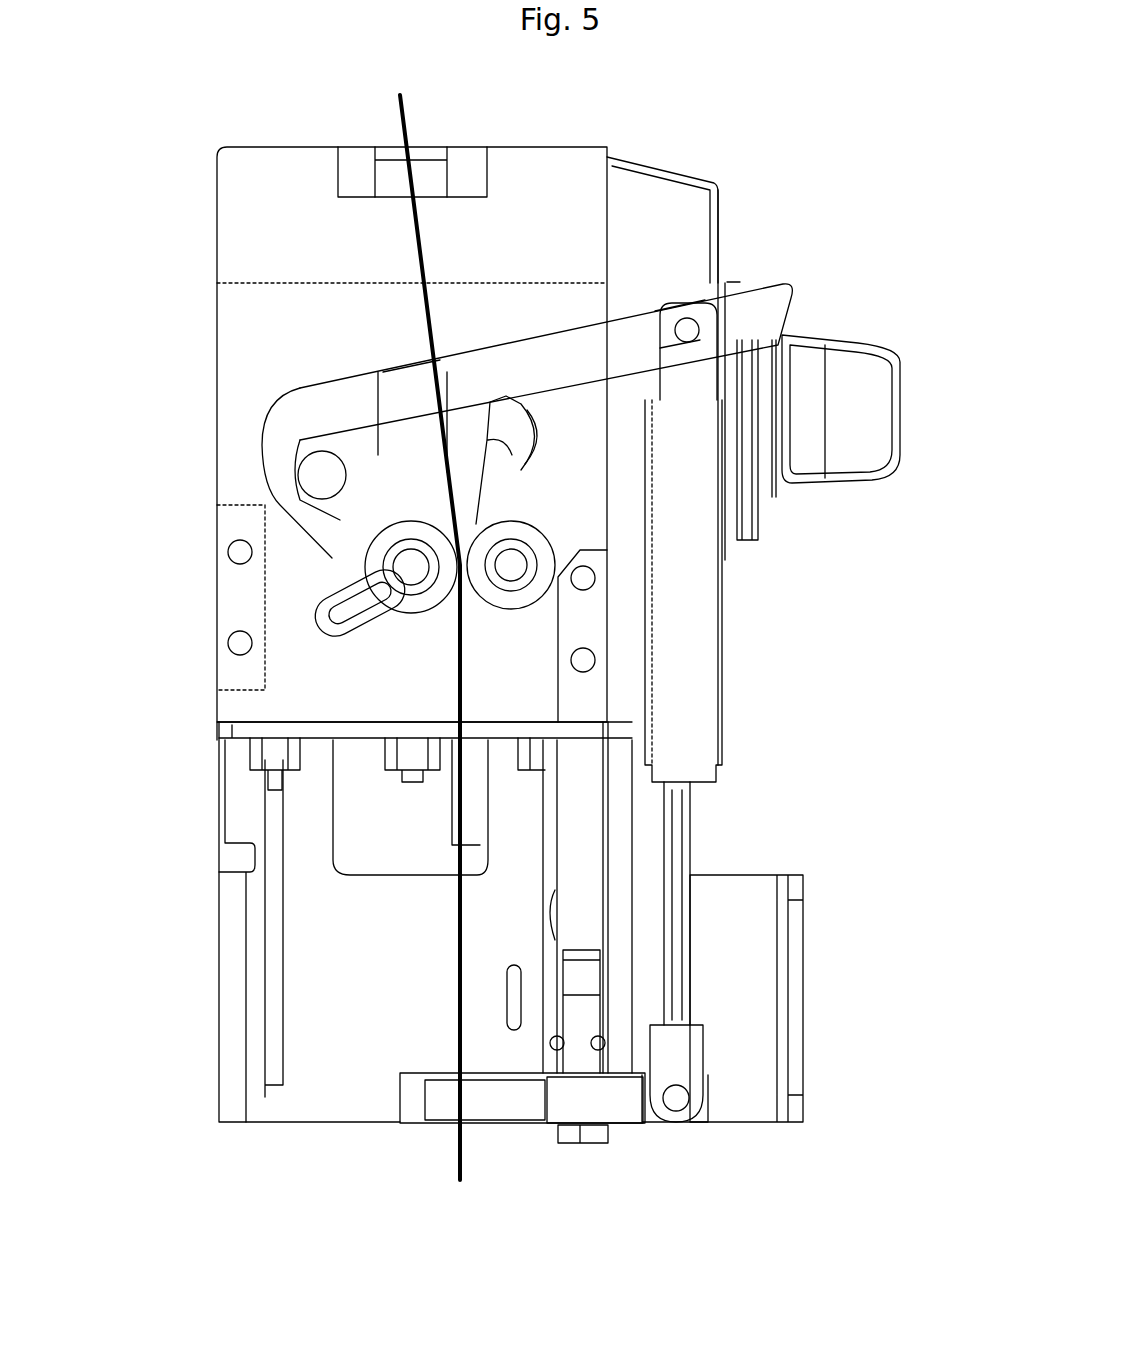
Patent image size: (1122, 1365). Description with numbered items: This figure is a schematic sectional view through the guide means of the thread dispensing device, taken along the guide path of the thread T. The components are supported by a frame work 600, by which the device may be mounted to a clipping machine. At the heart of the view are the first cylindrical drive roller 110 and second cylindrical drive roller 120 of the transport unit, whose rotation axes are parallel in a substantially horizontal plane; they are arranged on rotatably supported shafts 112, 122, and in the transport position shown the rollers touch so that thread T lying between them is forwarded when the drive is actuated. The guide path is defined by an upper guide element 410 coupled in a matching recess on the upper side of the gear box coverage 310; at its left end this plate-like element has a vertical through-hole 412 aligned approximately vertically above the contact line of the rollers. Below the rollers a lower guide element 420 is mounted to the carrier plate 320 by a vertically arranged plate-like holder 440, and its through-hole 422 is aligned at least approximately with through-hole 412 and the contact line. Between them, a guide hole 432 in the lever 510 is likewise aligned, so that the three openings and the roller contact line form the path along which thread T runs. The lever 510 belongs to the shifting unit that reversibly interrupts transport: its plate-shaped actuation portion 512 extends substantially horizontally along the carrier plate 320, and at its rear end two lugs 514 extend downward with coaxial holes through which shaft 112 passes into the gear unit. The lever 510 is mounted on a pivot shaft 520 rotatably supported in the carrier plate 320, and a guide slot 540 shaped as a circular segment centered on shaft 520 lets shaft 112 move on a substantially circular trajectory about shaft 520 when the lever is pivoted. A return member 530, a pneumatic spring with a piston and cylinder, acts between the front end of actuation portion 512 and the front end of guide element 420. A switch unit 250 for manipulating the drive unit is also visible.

The first cylindrical drive roller 110 is at (370, 555).
The shaft 112 is at (405, 565).
The second cylindrical drive roller 120 is at (487, 533).
The shaft 122 is at (460, 565).
The switch unit 250 is at (870, 345).
The gear box coverage 310 is at (567, 183).
The carrier plate 320 is at (258, 300).
The upper guide element 410 is at (360, 160).
The vertical through-hole 412 is at (432, 158).
The lower guide element 420 is at (410, 1105).
The through-hole 422 is at (522, 1105).
The guide hole 432 is at (408, 398).
The plate-like holder 440 is at (580, 855).
The shifting element or lever 510 is at (426, 404).
The actuation portion 512 is at (312, 398).
The lugs 514 is at (290, 445).
The pivot shaft 520 is at (315, 470).
The return member 530 is at (695, 750).
The guide slot 540 is at (350, 634).
The frame work 600 is at (234, 1118).
The thread T is at (460, 1175).